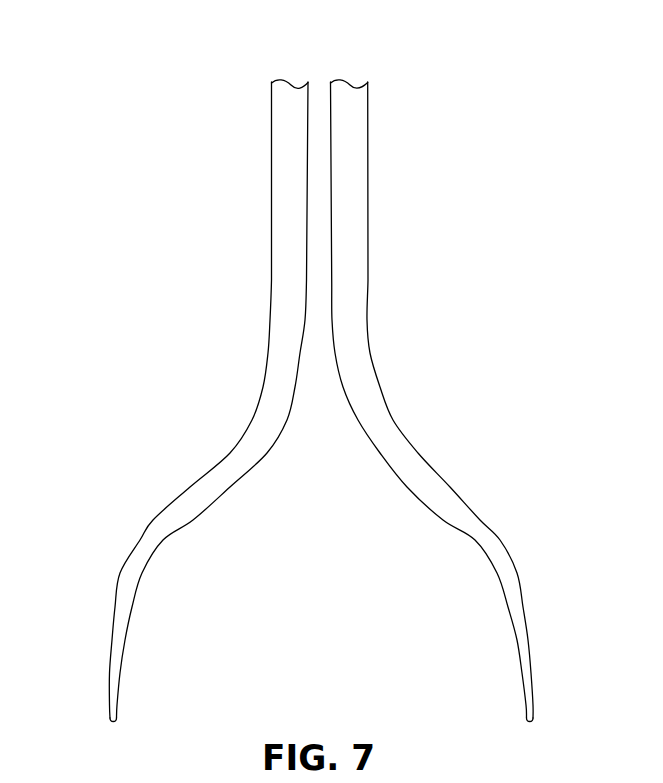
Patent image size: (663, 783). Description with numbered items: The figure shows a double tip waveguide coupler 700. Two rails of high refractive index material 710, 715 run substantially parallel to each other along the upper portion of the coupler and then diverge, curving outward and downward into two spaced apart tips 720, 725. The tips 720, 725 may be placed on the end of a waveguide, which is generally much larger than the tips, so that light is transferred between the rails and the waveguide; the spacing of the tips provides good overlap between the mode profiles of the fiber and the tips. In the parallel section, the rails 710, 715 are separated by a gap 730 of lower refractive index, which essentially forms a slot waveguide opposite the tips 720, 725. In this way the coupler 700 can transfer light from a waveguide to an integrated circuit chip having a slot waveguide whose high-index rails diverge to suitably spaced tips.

The double tip waveguide coupler 700 is at (320, 385).
The gap 730 is at (318, 88).
The rail of high refractive index material 715 is at (271, 277).
The rail of high refractive index material 710 is at (369, 277).
The tip 725 is at (109, 715).
The tip 720 is at (534, 715).